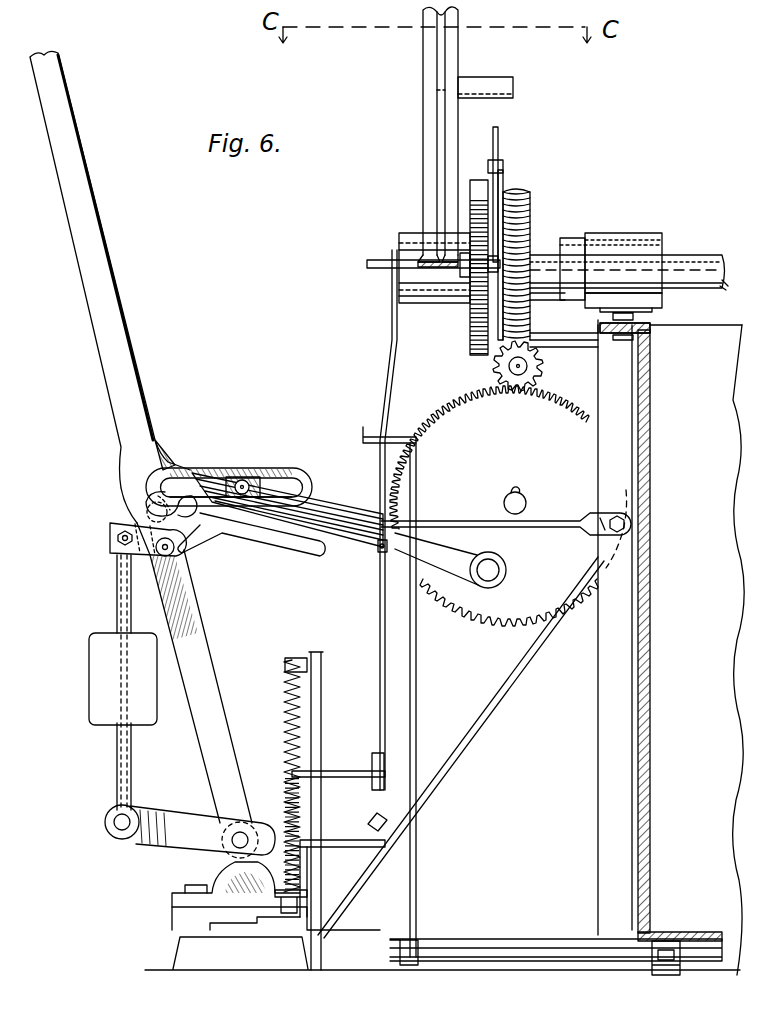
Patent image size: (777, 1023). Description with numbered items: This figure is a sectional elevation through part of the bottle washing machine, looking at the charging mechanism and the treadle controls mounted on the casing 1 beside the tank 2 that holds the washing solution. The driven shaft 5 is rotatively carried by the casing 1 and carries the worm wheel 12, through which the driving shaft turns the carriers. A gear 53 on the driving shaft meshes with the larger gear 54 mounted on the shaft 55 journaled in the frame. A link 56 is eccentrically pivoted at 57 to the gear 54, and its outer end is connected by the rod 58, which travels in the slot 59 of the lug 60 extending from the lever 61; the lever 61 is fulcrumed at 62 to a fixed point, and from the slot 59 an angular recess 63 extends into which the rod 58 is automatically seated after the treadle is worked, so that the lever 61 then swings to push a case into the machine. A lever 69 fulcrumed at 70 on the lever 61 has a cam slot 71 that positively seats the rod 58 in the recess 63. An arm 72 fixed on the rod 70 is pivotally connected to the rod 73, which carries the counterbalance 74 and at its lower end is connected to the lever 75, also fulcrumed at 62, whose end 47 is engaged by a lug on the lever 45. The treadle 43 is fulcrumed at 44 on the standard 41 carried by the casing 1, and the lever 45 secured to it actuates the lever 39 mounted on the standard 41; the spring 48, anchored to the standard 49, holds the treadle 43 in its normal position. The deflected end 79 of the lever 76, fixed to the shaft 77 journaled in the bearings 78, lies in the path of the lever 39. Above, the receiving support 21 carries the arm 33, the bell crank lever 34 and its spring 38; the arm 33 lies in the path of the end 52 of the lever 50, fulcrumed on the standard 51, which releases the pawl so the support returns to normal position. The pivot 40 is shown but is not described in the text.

The casing 1 is at (651, 785).
The tank 2 is at (710, 650).
The driven shaft 5 is at (690, 262).
The worm wheel 12 is at (528, 193).
The receiving support 21 is at (432, 58).
The arm 33 is at (503, 86).
The bell crank lever 34 is at (366, 264).
The spring 38 is at (432, 270).
The lever 39 is at (391, 335).
The pivot 40 is at (378, 548).
The standard 41 is at (443, 520).
The treadle 43 is at (283, 895).
The fulcrum 44 is at (305, 906).
The lever 45 is at (330, 771).
The end of lever 47 is at (322, 845).
The spring 48 is at (284, 697).
The standard 49 is at (322, 690).
The lever 50 is at (499, 140).
The standard 51 is at (503, 185).
The end of lever 52 is at (499, 128).
The gear 53 is at (510, 384).
The gear 54 is at (508, 506).
The shaft 55 is at (518, 502).
The link 56 is at (338, 514).
The eccentric pivot 57 is at (492, 568).
The rod 58 is at (245, 479).
The slot 59 is at (210, 477).
The lug 60 is at (188, 469).
The lever 61 is at (125, 348).
The fulcrum 62 is at (232, 848).
The recess 63 is at (150, 512).
The lever 69 is at (296, 546).
The rod 70 is at (163, 557).
The cam slot 71 is at (198, 522).
The arm 72 is at (110, 537).
The rod 73 is at (116, 592).
The counterbalance 74 is at (89, 680).
The lever 75 is at (126, 840).
The lever 76 is at (417, 688).
The shaft 77 is at (432, 947).
The bearing 78 is at (664, 941).
The deflected end 79 is at (363, 430).